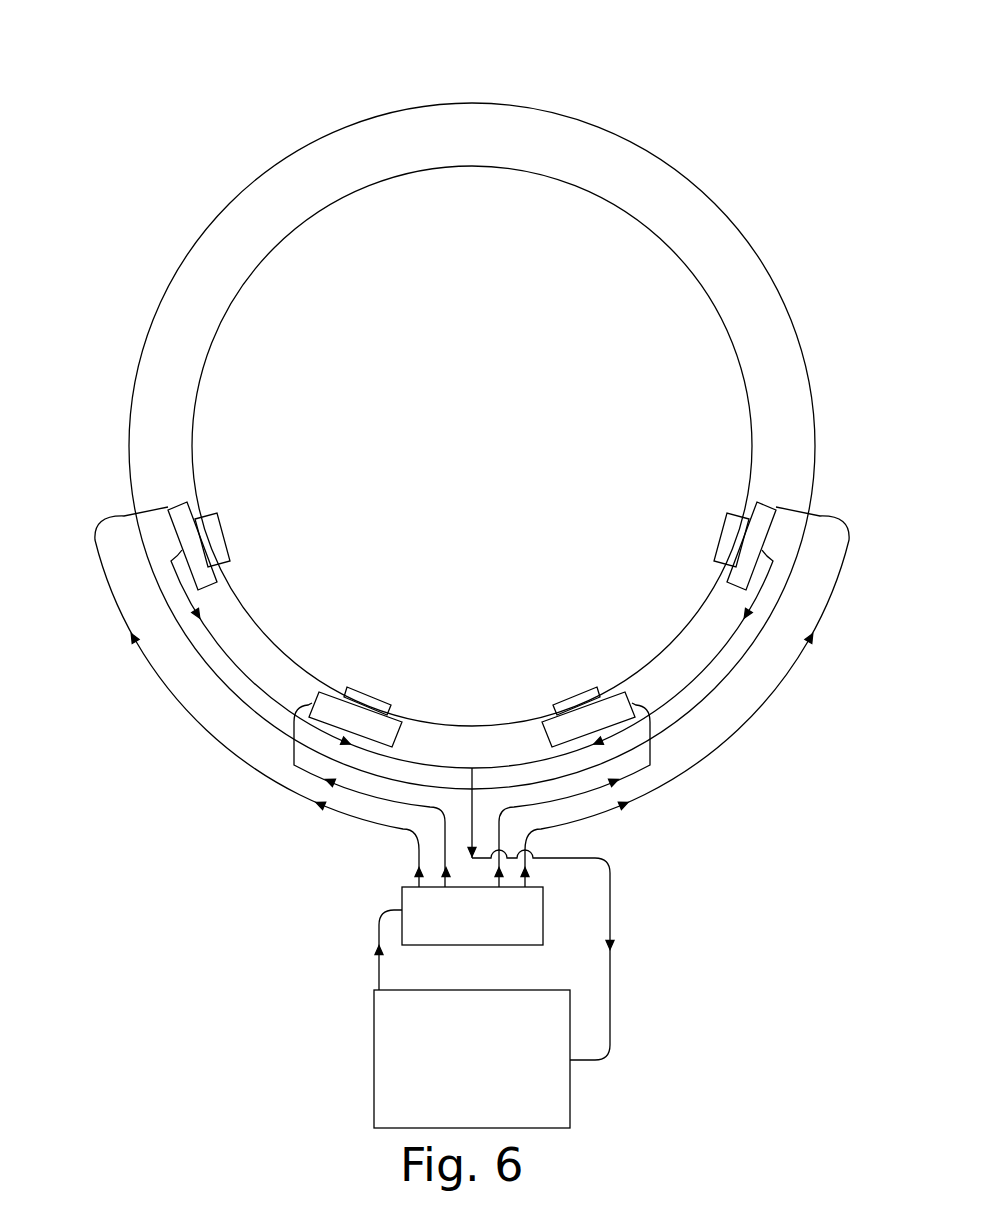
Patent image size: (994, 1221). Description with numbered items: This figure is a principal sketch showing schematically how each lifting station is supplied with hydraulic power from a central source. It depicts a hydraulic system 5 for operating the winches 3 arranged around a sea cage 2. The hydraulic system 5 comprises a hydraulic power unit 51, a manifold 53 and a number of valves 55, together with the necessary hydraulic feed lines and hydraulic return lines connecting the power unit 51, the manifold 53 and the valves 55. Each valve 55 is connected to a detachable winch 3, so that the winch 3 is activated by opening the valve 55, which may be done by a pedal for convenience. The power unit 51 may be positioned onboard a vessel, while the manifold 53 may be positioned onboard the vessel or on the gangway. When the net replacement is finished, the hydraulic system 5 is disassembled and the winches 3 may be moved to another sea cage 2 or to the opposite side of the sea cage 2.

The sea cage 2 is at (213, 128).
The winch 3 is at (217, 513).
The hydraulic system 5 is at (205, 936).
The hydraulic power unit 51 is at (435, 1057).
The manifold 53 is at (435, 925).
The valve 55 is at (182, 520).